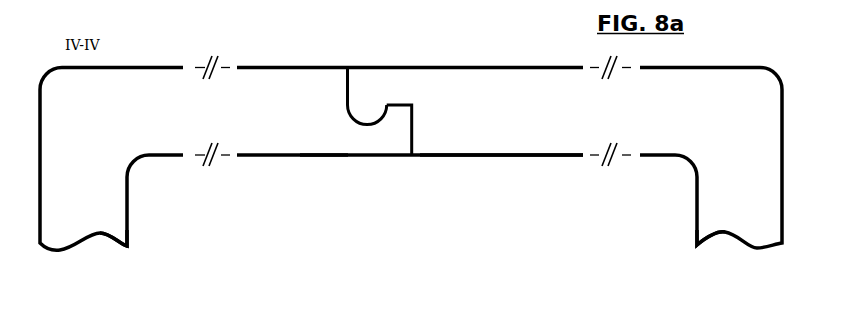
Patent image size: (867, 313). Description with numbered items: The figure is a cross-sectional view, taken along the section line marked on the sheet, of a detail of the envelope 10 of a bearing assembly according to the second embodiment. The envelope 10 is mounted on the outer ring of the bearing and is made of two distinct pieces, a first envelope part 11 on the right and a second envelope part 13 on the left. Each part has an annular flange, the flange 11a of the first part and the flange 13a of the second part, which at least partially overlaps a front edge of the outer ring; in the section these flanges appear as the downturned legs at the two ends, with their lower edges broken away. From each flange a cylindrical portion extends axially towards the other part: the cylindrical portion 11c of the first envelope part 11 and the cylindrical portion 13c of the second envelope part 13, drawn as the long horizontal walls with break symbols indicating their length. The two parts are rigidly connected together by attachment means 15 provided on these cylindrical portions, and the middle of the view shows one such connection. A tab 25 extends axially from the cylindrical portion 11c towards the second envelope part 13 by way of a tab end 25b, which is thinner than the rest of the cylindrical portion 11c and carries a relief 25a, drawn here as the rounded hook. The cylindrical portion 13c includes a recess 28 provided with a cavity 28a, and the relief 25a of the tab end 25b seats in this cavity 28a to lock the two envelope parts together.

The envelope 10 is at (711, 56).
The first envelope part 11 is at (622, 191).
The annular flange 11a is at (695, 241).
The cylindrical portion 11c is at (555, 151).
The second envelope part 13 is at (220, 191).
The annular flange 13a is at (129, 248).
The cylindrical portion 13c is at (250, 63).
The attachment means 15 is at (371, 190).
The tab 25 is at (410, 64).
The relief 25a is at (372, 113).
The tab end 25b is at (388, 64).
The recess 28 is at (392, 146).
The cavity 28a is at (340, 108).